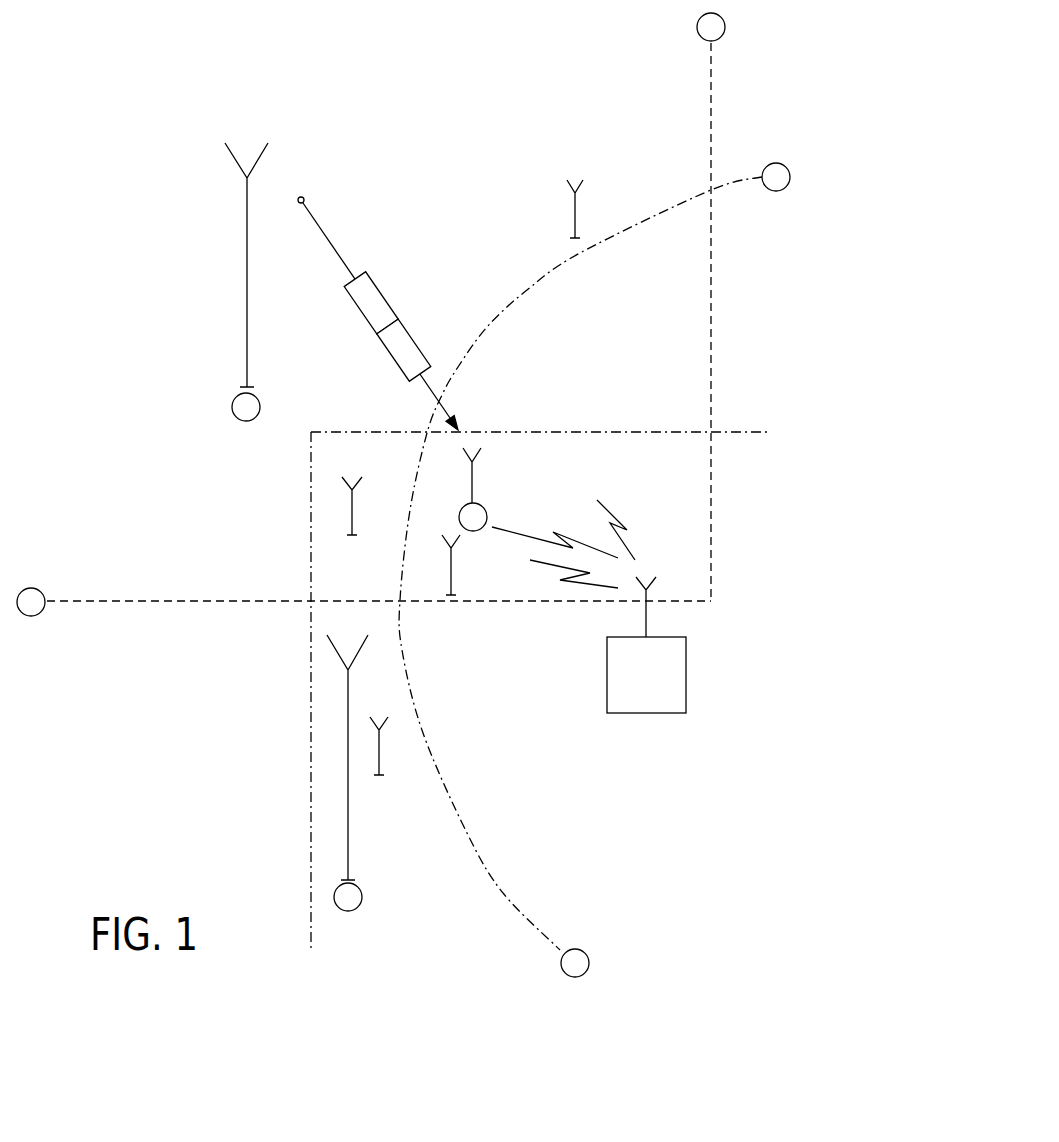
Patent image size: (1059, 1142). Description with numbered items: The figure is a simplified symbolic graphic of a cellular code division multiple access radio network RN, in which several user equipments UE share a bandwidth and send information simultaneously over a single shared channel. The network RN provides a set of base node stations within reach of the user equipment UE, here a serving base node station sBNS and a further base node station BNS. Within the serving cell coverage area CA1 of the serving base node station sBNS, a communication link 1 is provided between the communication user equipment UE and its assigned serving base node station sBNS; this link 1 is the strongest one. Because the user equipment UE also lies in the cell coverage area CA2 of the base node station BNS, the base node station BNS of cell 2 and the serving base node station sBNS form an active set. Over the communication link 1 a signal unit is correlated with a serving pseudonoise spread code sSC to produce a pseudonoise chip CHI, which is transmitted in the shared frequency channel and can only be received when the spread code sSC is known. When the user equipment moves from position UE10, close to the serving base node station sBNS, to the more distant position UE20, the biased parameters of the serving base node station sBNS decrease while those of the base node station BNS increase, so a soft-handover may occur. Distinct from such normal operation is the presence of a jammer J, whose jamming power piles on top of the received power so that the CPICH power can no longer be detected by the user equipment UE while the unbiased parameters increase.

The radio network RN is at (233, 53).
The communication link 1 is at (378, 309).
The base node station cell identifier 2 is at (547, 698).
The serving base node station sBNS is at (247, 318).
The base node station BNS is at (348, 803).
The user equipment UE is at (575, 220).
The user equipment position 10 UE10 is at (352, 505).
The user equipment position 20 UE20 is at (379, 752).
The serving pseudonoise spread code sSC is at (371, 303).
The pseudonoise chip CHI is at (404, 350).
The serving cell coverage area CA1 is at (497, 248).
The cell coverage area CA2 is at (662, 819).
The jammer J is at (589, 621).